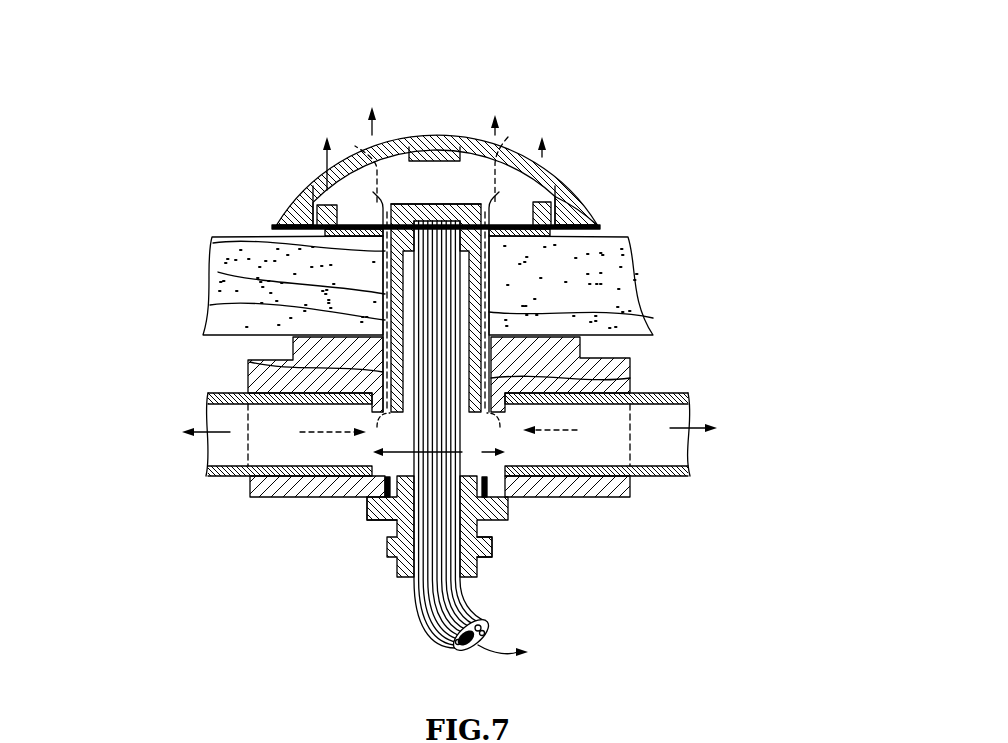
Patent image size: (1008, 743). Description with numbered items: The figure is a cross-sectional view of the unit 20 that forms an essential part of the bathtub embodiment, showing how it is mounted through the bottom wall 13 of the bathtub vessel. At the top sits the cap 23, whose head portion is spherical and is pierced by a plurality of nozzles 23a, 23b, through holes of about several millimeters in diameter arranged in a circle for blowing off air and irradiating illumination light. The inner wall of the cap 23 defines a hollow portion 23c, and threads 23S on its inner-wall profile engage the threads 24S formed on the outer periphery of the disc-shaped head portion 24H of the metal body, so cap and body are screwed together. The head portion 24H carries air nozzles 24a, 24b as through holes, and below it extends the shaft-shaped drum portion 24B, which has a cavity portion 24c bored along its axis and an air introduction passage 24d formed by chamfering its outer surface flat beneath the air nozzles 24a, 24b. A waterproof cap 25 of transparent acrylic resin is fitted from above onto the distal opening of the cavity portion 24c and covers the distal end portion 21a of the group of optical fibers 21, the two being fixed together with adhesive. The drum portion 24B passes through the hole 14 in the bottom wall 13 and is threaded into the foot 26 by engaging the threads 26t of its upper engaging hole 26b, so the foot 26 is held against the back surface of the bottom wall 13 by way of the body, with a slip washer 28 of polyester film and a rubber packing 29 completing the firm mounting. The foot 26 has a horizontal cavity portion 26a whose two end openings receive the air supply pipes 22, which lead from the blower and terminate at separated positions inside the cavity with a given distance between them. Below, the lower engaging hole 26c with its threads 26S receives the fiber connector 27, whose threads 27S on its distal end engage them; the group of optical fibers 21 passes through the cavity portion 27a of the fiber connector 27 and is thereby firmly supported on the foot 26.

The unit 20 is at (328, 108).
The group of optical fibers 21 is at (440, 570).
The distal end portion of the group of optical fibers 21a is at (447, 160).
The air supply pipes 22 is at (215, 477).
The cap 23 is at (443, 202).
The nozzle 23a is at (550, 187).
The nozzle 23b is at (508, 137).
The hollow portion 23c is at (365, 183).
The threads 23S is at (546, 212).
The air nozzle 24a is at (325, 215).
The air nozzle 24b is at (556, 200).
The drum portion 24B is at (387, 247).
The cavity portion 24c is at (392, 283).
The air introduction passage 24d is at (403, 300).
The head portion 24H is at (300, 212).
The threads 24S is at (575, 222).
The waterproof cap 25 is at (425, 202).
The foot portion 26 is at (628, 348).
The cavity portion 26a is at (548, 440).
The engaging hole 26b is at (628, 378).
The engaging hole 26c is at (493, 487).
The threads 26S is at (400, 480).
The threads 26t is at (250, 366).
The fiber connector 27 is at (495, 515).
The cavity portion 27a is at (480, 555).
The threads 27S is at (395, 515).
The slip washer 28 is at (550, 232).
The packing 29 is at (325, 231).
The bottom wall 13 is at (622, 278).
The hole 14 is at (622, 312).